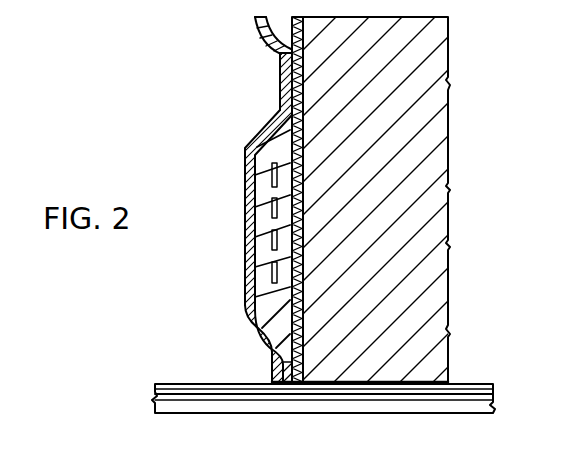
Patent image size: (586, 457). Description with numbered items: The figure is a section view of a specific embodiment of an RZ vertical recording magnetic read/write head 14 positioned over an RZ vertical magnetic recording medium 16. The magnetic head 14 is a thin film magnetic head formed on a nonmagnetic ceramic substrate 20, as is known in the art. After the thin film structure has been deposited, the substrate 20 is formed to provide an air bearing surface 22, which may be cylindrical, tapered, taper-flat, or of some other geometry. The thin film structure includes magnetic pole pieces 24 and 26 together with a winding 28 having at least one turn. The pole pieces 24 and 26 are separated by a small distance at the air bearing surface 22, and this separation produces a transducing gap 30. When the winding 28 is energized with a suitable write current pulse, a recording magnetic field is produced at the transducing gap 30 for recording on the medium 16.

The magnetic read/write head 14 is at (236, 241).
The magnetic recording medium 16 is at (421, 419).
The nonmagnetic ceramic substrate 20 is at (443, 144).
The air bearing surface 22 is at (334, 384).
The magnetic pole piece 24 is at (297, 347).
The magnetic pole piece 26 is at (255, 329).
The winding 28 is at (248, 203).
The transducing gap 30 is at (288, 384).